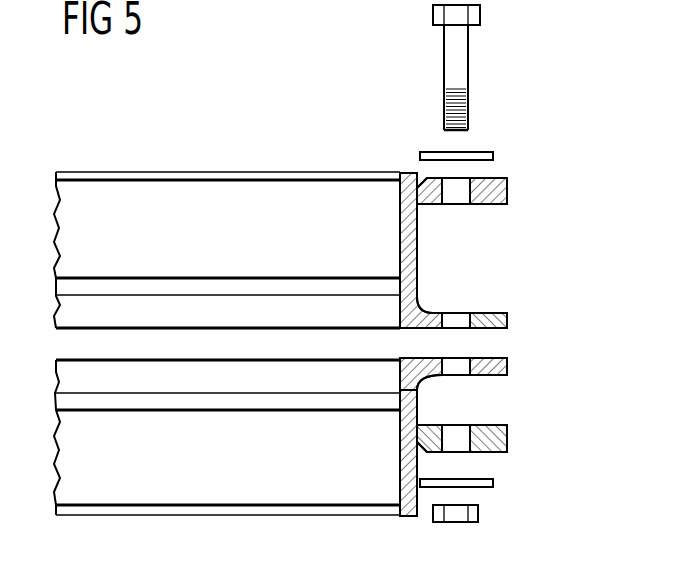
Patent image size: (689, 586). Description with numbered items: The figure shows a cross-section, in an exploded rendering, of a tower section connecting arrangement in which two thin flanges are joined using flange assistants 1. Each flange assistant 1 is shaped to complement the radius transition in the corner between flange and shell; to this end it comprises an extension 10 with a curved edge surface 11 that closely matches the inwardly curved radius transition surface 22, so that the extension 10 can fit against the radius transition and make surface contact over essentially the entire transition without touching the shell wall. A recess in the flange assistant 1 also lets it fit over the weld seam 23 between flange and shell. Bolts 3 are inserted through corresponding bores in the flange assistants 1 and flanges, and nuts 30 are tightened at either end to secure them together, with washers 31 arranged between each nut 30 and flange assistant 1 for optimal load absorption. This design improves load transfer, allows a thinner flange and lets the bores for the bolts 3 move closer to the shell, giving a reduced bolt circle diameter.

The flange assistant 1 is at (507, 194).
The bolt 3 is at (468, 112).
The extension 10 is at (424, 171).
The curved edge surface 11 is at (420, 203).
The inwardly curved surface 22 is at (422, 305).
The weld seam 23 is at (253, 283).
The nut 30 is at (480, 12).
The washer 31 is at (493, 156).